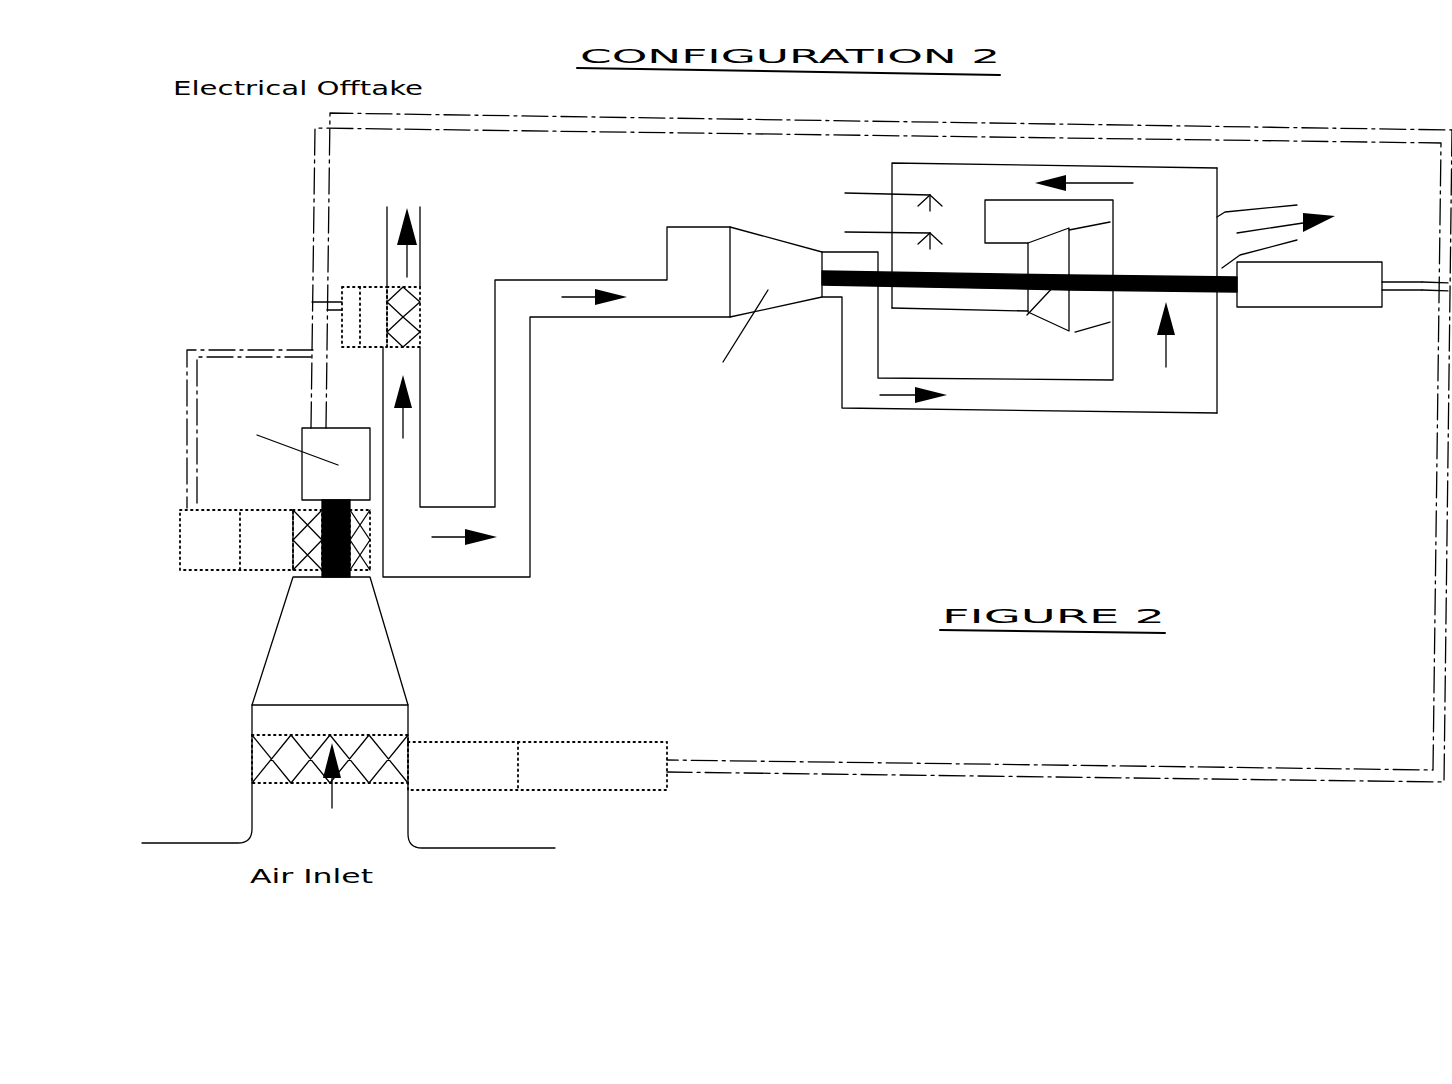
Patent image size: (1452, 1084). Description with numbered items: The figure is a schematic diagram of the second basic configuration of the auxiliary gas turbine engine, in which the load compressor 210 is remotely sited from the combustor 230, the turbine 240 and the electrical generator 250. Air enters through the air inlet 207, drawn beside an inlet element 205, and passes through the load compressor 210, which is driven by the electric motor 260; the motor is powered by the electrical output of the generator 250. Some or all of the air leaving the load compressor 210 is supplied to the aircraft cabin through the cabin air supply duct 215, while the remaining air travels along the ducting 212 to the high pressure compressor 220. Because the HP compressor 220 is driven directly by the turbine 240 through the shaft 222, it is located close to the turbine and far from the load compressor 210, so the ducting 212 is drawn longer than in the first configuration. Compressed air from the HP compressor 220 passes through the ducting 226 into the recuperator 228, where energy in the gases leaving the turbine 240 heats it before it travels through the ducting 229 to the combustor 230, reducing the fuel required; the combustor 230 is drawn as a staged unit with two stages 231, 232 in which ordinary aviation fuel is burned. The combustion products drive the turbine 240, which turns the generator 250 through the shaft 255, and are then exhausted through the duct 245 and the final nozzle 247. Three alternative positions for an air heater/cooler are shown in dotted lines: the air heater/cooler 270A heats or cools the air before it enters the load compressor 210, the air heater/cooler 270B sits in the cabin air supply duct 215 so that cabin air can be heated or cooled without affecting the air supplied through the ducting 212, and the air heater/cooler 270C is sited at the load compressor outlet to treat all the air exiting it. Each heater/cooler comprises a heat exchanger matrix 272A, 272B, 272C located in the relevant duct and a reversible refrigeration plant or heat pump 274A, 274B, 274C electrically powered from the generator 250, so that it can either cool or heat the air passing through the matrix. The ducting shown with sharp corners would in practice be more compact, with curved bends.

The inlet plenum 205 is at (495, 851).
The air inlet 207 is at (408, 846).
The load compressor 210 is at (349, 624).
The ducting 212 is at (545, 445).
The cabin air supply duct 215 is at (448, 417).
The high pressure compressor 220 is at (792, 274).
The shaft 222 is at (1012, 268).
The ducting 226 is at (1058, 414).
The recuperator 228 is at (1188, 377).
The ducting 229 is at (1105, 160).
The combustor 230 is at (892, 173).
The first stage fuel injector 231 is at (902, 202).
The second stage fuel injector 232 is at (902, 240).
The turbine 240 is at (1072, 272).
The exhaust duct 245 is at (1095, 328).
The final nozzle 247 is at (1278, 202).
The electrical generator 250 is at (1323, 312).
The shaft 255 is at (1198, 272).
The electric motor 260 is at (354, 492).
The air heater/cooler 270A is at (469, 724).
The air heater/cooler 270B is at (492, 276).
The air heater/cooler 270C is at (264, 584).
The heat exchanger matrix 272A is at (252, 757).
The heat exchanger matrix 272B is at (420, 325).
The heat exchanger matrix 272C is at (302, 505).
The reversible refrigeration plant or heat pump 274A is at (492, 725).
The reversible refrigeration plant or heat pump 274B is at (350, 298).
The reversible refrigeration plant or heat pump 274C is at (256, 575).